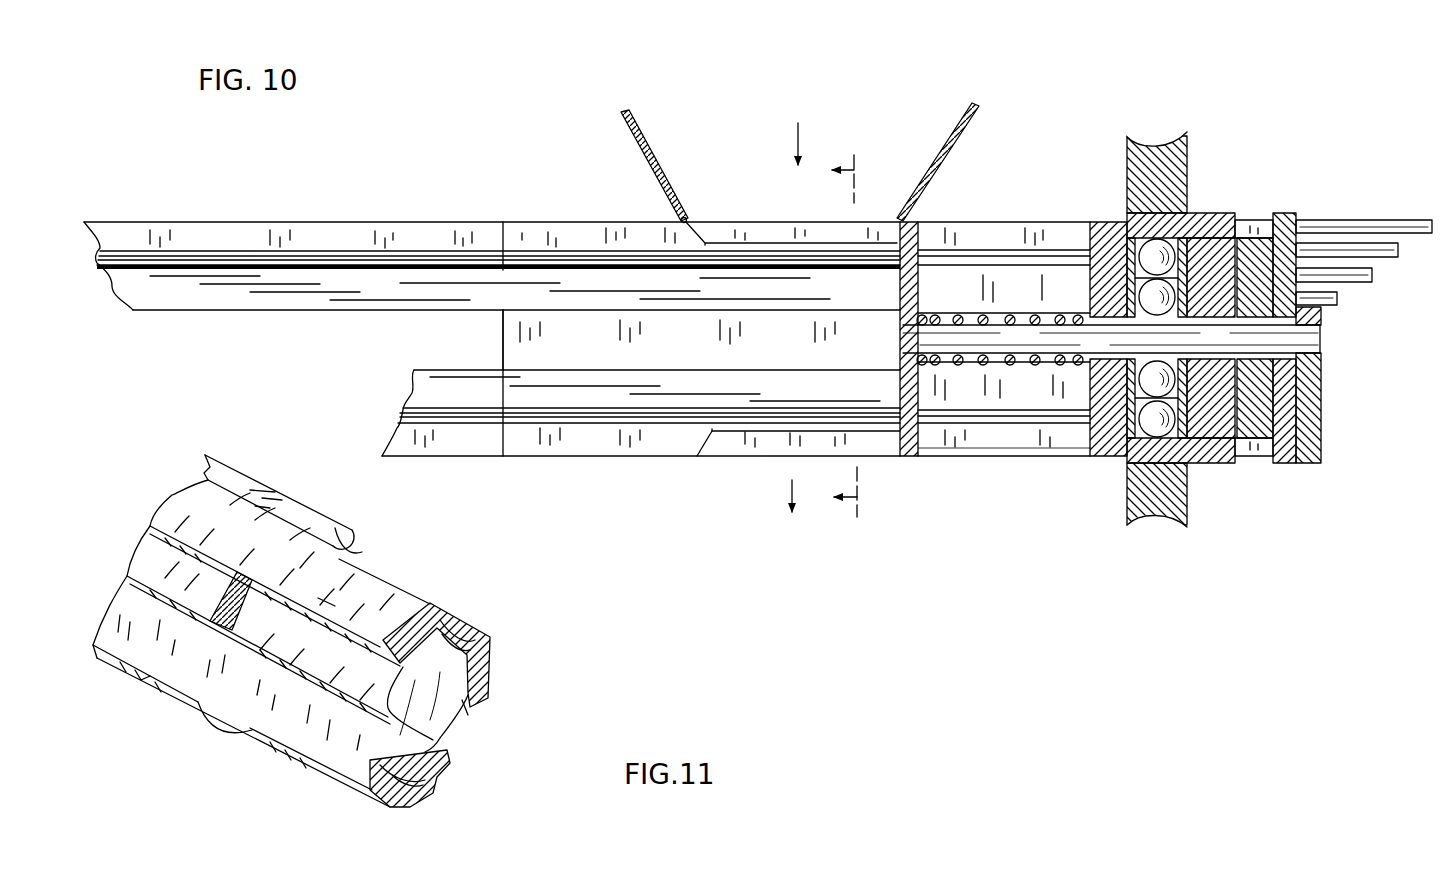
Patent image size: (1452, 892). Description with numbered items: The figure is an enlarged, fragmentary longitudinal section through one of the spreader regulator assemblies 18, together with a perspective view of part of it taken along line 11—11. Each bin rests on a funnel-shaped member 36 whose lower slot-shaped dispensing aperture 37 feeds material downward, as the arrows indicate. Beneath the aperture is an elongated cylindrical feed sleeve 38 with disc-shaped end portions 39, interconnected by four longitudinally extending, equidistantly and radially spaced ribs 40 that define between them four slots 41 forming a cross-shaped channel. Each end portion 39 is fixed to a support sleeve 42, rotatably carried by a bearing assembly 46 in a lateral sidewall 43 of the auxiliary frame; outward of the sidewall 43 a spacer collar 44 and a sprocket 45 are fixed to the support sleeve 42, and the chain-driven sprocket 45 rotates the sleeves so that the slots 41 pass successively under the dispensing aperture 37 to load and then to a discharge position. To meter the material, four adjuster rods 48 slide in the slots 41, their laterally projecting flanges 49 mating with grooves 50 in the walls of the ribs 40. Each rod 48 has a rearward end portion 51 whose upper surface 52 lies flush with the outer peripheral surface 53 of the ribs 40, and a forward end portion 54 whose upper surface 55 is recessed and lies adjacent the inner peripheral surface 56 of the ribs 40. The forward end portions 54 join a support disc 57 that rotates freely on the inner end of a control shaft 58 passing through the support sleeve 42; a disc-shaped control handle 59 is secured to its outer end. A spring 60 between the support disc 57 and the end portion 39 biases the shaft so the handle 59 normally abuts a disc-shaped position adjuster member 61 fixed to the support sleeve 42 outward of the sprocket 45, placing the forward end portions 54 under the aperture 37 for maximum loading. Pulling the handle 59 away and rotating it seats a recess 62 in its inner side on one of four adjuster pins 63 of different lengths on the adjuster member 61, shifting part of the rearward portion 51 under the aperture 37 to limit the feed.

In FIG. 10, the section line 11— 11 is at (840, 320).
In FIG. 10, the regulator assembly 18 is at (1380, 472).
In FIG. 11, the regulator assembly 18 is at (524, 596).
In FIG. 10, the funnel-shaped member 36 is at (667, 165).
In FIG. 10, the slot-shaped dispensing aperture 37 is at (676, 220).
In FIG. 10, the feed sleeve 38 is at (948, 460).
In FIG. 10, the end portion 39 is at (1100, 432).
In FIG. 10, the rib 40 is at (428, 297).
In FIG. 11, the rib 40 is at (433, 604).
In FIG. 10, the slot 41 is at (1012, 236).
In FIG. 11, the slot 41 is at (455, 625).
In FIG. 10, the support sleeve 42 is at (1088, 304).
In FIG. 10, the lateral sidewall 43 is at (1152, 158).
In FIG. 10, the spacer collar 44 is at (1205, 227).
In FIG. 10, the sprocket 45 is at (1253, 234).
In FIG. 10, the bearing assembly 46 is at (1118, 240).
In FIG. 10, the adjuster rod 48 is at (578, 245).
In FIG. 11, the adjuster rod 48 is at (146, 528).
In FIG. 10, the flange 49 is at (530, 260).
In FIG. 10, the groove 50 is at (360, 258).
In FIG. 10, the rearward end portion 51 is at (605, 228).
In FIG. 11, the rearward end portion 51 is at (236, 608).
In FIG. 10, the upper surface 52 is at (505, 222).
In FIG. 11, the upper surface 52 is at (152, 575).
In FIG. 10, the outer peripheral surface 53 is at (237, 222).
In FIG. 10, the forward end portion 54 is at (760, 253).
In FIG. 11, the forward end portion 54 is at (462, 712).
In FIG. 10, the upper surface 55 is at (822, 243).
In FIG. 11, the upper surface 55 is at (292, 727).
In FIG. 10, the inner peripheral surface 56 is at (943, 276).
In FIG. 10, the support disc 57 is at (908, 452).
In FIG. 10, the control shaft 58 is at (930, 327).
In FIG. 10, the control handle 59 is at (1320, 373).
In FIG. 10, the spring 60 is at (1012, 364).
In FIG. 10, the position adjuster member 61 is at (1285, 214).
In FIG. 10, the recess 62 is at (1310, 464).
In FIG. 10, the adjuster pin 63 is at (1345, 232).